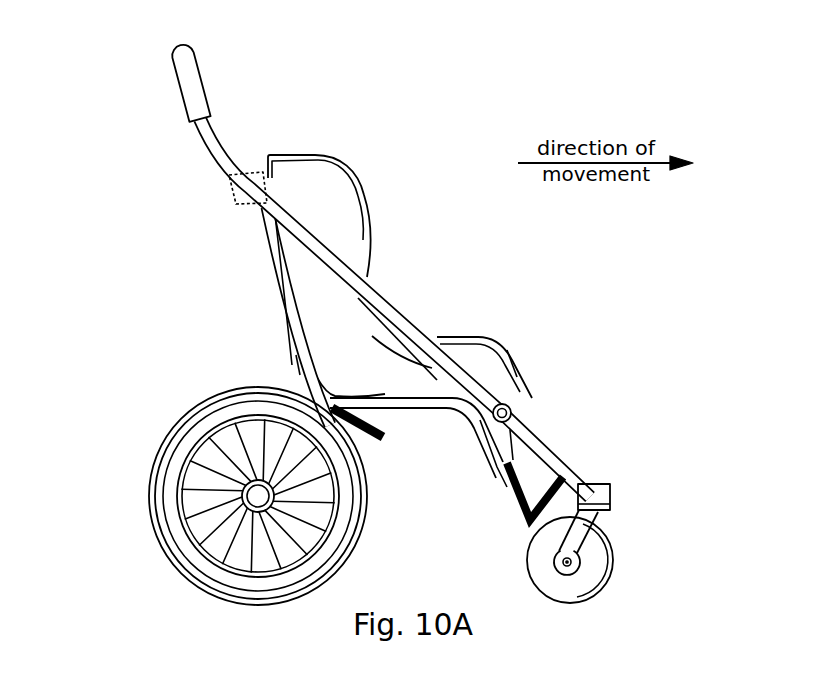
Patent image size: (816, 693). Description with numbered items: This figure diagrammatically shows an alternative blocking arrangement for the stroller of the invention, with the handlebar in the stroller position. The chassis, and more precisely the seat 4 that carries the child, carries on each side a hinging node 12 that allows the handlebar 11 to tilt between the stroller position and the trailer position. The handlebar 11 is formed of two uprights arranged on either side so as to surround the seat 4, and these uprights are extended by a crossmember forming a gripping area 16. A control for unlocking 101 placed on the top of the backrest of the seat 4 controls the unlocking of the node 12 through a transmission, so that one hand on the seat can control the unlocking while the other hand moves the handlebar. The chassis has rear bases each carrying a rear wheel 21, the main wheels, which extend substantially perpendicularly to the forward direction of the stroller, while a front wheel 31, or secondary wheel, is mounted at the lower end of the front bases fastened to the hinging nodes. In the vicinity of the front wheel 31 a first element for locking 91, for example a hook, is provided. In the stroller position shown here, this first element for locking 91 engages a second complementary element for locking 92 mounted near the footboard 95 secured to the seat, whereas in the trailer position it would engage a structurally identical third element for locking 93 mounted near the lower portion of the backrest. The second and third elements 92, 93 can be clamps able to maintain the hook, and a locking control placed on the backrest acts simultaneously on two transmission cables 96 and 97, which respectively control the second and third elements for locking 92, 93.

The seat 4 is at (333, 193).
The handlebar 11 is at (247, 190).
The hinging node 12 is at (513, 408).
The gripping area 16 is at (178, 80).
The rear wheel 21 is at (197, 417).
The front wheel 31 is at (593, 570).
The first element for locking 91 is at (570, 489).
The second complementary element for locking 92 is at (377, 440).
The third additional element for locking 93 is at (507, 500).
The footboard 95 is at (480, 487).
The transmission cable 96 is at (298, 368).
The transmission cable 97 is at (293, 347).
The control for unlocking 101 is at (247, 173).